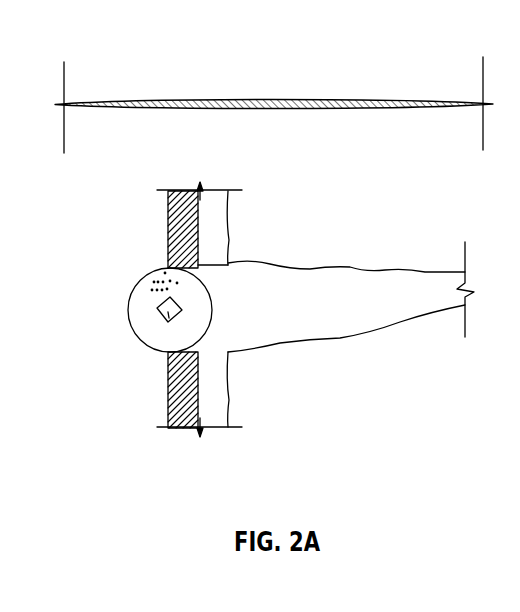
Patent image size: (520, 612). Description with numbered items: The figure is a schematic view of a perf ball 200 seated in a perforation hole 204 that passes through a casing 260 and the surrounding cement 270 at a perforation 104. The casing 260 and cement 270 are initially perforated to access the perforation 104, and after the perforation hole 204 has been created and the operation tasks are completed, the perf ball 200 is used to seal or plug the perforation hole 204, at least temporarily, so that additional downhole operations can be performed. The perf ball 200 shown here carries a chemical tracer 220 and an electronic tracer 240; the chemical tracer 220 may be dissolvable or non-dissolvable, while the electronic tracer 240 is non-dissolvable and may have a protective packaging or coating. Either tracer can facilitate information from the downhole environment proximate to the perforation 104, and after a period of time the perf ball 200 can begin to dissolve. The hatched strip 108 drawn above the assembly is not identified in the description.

The base substrate / platen strip 108 is at (272, 100).
The perforation 104 is at (307, 317).
The perforation hole 204 is at (233, 282).
The perf ball 200 is at (133, 338).
The chemical tracer 220 is at (154, 271).
The electronic tracer 240 is at (167, 321).
The casing 260 is at (168, 408).
The cement 270 is at (212, 388).